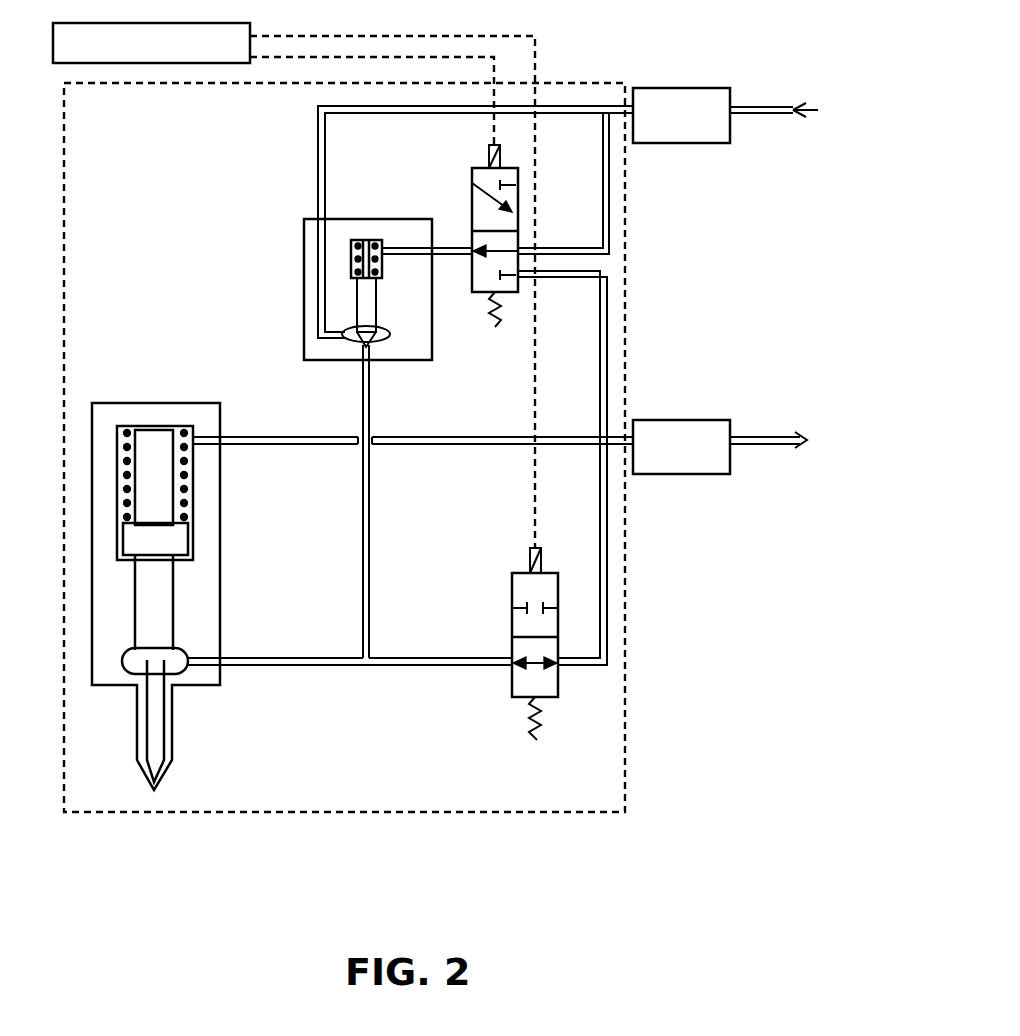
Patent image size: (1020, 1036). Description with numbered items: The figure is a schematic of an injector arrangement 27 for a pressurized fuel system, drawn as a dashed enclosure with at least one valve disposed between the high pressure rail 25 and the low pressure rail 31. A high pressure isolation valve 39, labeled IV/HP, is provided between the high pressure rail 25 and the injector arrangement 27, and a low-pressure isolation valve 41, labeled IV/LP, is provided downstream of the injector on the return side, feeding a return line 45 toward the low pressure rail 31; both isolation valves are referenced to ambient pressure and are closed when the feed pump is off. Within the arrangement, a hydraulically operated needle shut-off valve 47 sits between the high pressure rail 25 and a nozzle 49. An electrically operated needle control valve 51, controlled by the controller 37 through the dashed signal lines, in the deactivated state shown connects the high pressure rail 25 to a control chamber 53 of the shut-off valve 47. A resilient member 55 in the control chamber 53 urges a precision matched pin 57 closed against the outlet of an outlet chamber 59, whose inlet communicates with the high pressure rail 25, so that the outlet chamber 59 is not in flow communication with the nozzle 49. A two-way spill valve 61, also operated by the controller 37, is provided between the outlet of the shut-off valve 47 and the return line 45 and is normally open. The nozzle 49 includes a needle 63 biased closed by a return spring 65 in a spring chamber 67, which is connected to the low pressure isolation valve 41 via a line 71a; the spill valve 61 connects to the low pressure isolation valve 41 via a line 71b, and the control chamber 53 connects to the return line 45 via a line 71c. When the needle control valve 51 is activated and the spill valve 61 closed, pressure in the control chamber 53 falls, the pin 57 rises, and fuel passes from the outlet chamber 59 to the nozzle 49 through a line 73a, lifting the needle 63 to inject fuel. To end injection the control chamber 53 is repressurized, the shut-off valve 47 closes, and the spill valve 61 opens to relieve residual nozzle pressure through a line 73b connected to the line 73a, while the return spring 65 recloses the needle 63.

The high pressure rail 25 is at (799, 132).
The injector arrangement 27 is at (257, 818).
The low pressure rail 31 is at (839, 467).
The controller 37 is at (253, 31).
The isolation valve 39 is at (672, 144).
The low-pressure isolation valve 41 is at (672, 475).
The return line 45 is at (779, 435).
The needle shut-off valve 47 is at (303, 277).
The nozzle 49 is at (221, 576).
The needle control valve 51 is at (472, 172).
The control chamber 53 is at (378, 240).
The resilient member 55 is at (358, 240).
The pin 57 is at (370, 343).
The outlet chamber 59 is at (352, 338).
The spill valve 61 is at (512, 580).
The needle 63 is at (160, 770).
The return spring 65 is at (128, 428).
The spring chamber 67 is at (176, 456).
The line 71a is at (445, 445).
The line 71b is at (610, 628).
The line 71c is at (610, 352).
The line 73a is at (362, 538).
The line 73b is at (428, 670).